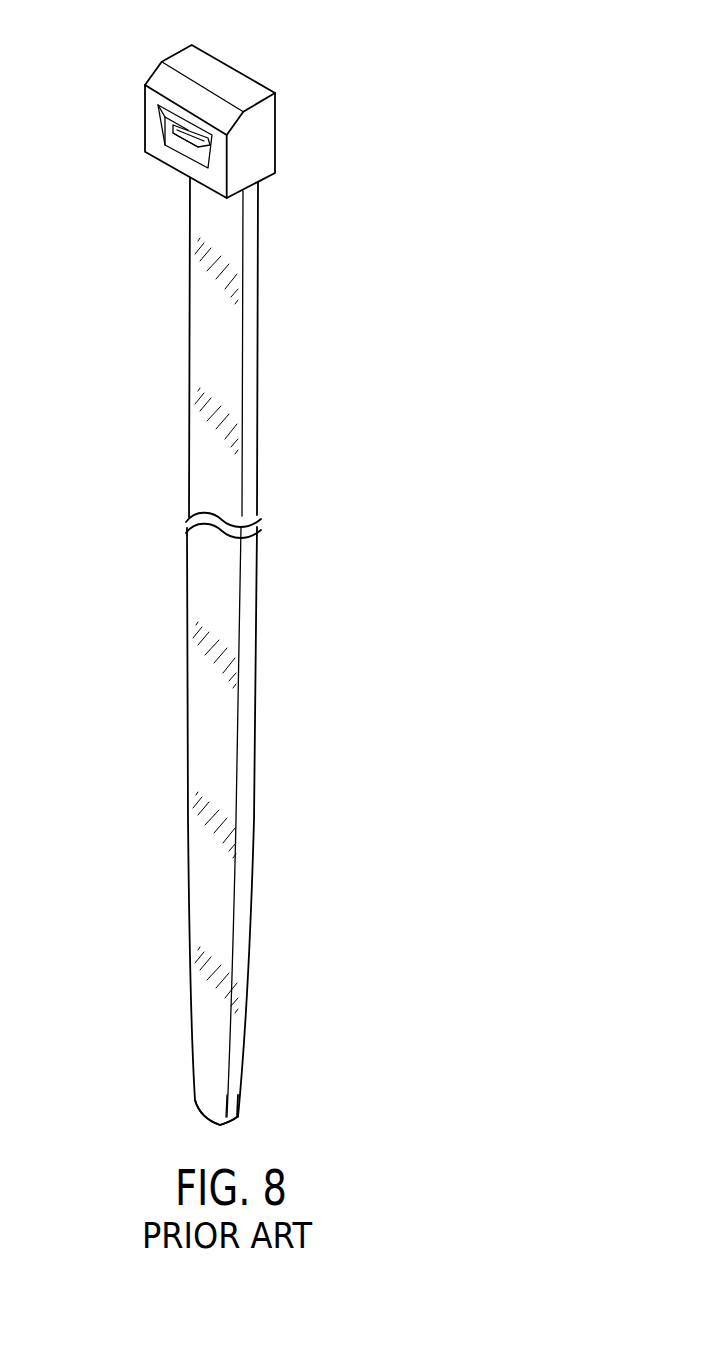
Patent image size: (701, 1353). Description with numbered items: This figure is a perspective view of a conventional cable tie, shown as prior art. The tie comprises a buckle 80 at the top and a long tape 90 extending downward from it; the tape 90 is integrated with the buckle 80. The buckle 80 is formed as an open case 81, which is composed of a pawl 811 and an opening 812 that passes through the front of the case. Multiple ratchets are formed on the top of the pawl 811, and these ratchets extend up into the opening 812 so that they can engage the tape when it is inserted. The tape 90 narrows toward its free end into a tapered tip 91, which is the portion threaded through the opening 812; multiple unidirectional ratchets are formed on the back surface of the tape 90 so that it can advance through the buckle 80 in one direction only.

The buckle 80 is at (219, 115).
The open case 81 is at (148, 108).
The pawl 811 is at (191, 140).
The opening 812 is at (162, 118).
The tape 90 is at (278, 435).
The tapered tip 91 is at (208, 1093).